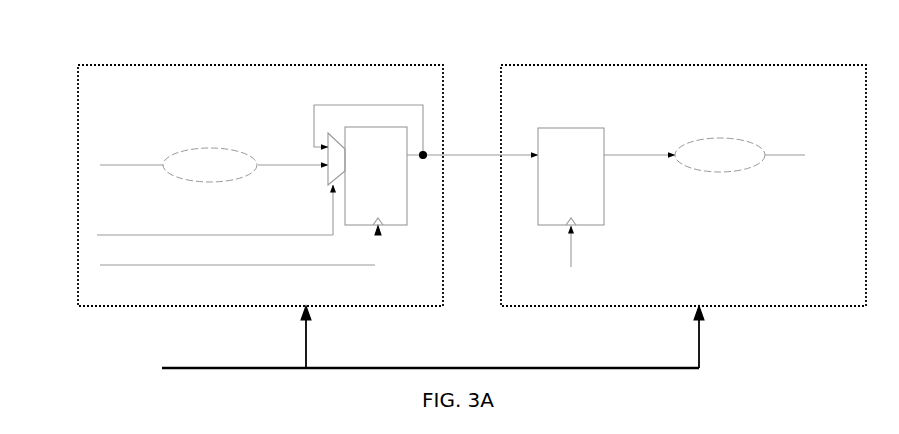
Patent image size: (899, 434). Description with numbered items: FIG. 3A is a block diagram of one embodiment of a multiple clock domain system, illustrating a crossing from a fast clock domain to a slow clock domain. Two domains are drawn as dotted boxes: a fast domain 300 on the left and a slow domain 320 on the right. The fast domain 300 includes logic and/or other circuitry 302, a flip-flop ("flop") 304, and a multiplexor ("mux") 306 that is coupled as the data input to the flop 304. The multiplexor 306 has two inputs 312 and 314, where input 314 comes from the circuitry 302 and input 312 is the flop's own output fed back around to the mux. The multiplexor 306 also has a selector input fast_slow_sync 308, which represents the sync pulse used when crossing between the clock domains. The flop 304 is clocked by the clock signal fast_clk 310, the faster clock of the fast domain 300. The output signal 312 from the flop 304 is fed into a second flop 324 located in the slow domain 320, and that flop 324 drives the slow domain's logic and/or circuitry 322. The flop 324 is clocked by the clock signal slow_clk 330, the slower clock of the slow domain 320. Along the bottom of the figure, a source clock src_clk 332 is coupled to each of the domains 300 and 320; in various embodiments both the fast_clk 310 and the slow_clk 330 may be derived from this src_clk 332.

The fast domain 300 is at (258, 65).
The logic and/or other circuitry 302 is at (178, 165).
The flip-flop 304 is at (376, 181).
The multiplexor 306 is at (337, 148).
The fast_slow_sync 308 is at (110, 233).
The fast_clk 310 is at (115, 265).
The output signal 312 is at (461, 155).
The input 314 is at (280, 165).
The slow domain 320 is at (687, 65).
The logic and/or circuitry 322 is at (704, 155).
The flip-flop 324 is at (571, 197).
The slow_clk 330 is at (774, 265).
The source clock 332 is at (225, 368).